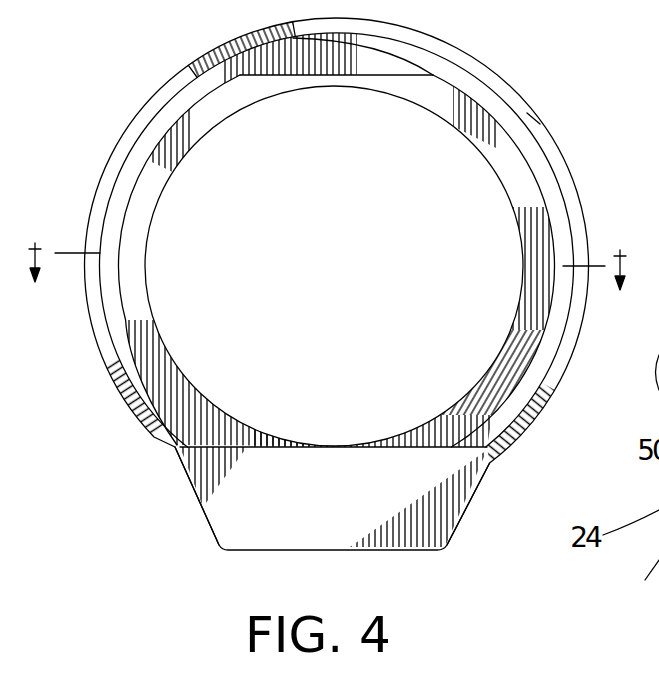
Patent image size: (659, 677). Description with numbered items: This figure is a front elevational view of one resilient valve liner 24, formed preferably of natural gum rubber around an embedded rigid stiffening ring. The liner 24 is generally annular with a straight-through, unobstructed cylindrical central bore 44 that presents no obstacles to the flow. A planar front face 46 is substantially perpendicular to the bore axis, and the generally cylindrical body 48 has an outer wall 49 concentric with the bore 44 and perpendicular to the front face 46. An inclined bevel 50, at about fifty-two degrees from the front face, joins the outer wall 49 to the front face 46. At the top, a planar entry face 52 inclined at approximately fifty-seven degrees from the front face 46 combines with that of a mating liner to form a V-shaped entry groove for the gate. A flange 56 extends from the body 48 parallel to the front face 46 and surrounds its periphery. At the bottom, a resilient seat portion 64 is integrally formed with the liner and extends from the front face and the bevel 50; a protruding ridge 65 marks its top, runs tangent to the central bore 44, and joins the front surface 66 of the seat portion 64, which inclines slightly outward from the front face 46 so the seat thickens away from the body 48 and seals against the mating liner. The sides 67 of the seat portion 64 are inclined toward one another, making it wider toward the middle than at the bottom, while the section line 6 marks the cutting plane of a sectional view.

The valve liner 24 is at (85, 185).
The body 48 is at (137, 141).
The outer wall 49 is at (530, 119).
The bevel 50 is at (542, 195).
The entry face 52 is at (403, 45).
The central bore 44 is at (173, 172).
The front face 46 is at (501, 350).
The flange 56 is at (105, 363).
The protruding ridge 65 is at (258, 440).
The seat portion 64 is at (215, 532).
The front surface 66 is at (317, 514).
The base side walls 67 is at (190, 478).
The section line 6 is at (326, 280).